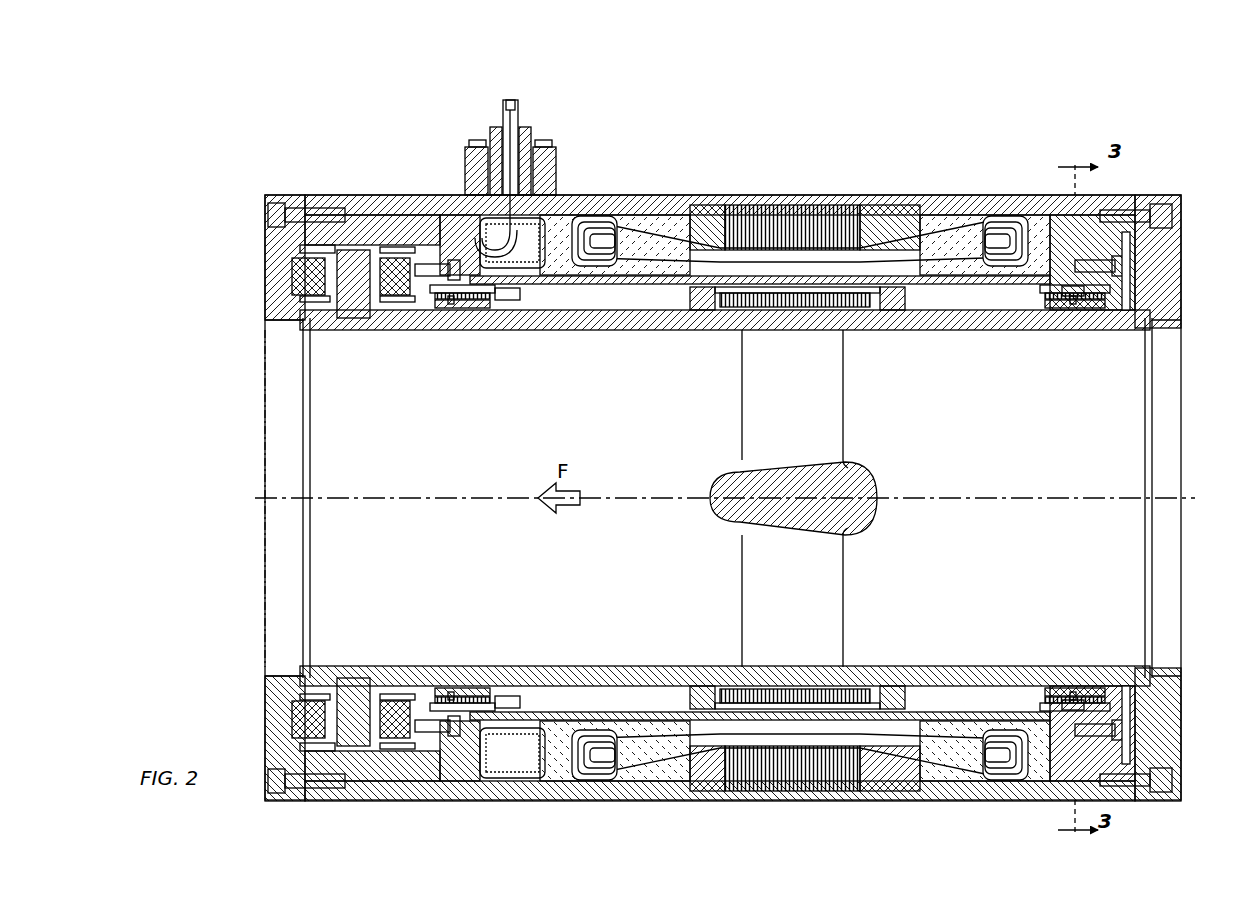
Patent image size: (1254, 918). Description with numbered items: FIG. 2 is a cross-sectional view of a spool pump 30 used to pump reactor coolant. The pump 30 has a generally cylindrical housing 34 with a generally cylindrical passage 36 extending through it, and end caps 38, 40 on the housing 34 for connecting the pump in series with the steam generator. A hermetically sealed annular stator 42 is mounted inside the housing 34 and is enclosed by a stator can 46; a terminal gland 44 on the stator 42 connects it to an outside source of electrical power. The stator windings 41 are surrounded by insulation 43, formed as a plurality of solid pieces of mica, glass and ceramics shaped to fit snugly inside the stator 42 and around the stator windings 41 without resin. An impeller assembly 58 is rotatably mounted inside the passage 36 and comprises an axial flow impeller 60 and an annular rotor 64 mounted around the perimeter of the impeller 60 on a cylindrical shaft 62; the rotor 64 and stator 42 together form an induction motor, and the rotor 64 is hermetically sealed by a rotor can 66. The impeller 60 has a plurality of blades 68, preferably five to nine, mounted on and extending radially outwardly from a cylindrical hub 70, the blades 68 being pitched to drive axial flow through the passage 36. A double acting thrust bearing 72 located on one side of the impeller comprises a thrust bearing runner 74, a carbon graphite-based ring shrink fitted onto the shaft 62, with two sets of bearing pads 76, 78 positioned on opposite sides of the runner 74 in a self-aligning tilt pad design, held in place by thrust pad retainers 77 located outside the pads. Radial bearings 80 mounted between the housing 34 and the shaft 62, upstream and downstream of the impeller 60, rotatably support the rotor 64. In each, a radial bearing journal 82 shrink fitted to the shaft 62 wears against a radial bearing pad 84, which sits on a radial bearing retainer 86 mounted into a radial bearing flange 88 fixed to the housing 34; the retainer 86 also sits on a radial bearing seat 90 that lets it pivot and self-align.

The spool pump 30 is at (240, 400).
The housing 34 is at (930, 197).
The passage 36 is at (1165, 425).
The end cap 38 is at (1181, 275).
The end cap 40 is at (285, 250).
The stator windings 41 is at (808, 245).
The stator 42 is at (760, 215).
The insulation 43 is at (640, 215).
The terminal gland 44 is at (548, 140).
The stator can 46 is at (830, 293).
The impeller assembly 58 is at (685, 432).
The axial flow impeller 60 is at (845, 425).
The cylindrical shaft 62 is at (985, 328).
The annular rotor 64 is at (700, 308).
The rotor can 66 is at (775, 307).
The blades 68 is at (845, 606).
The cylindrical hub 70 is at (868, 480).
The double acting thrust bearing 72 is at (355, 240).
The thrust bearing runner 74 is at (355, 318).
The bearing pads 76 is at (310, 297).
The thrust pad retainers 77 is at (300, 296).
The bearing pads 78 is at (395, 300).
The radial bearings 80 is at (505, 298).
The radial bearing journal 82 is at (475, 300).
The radial bearing pad 84 is at (460, 300).
The radial bearing retainer 86 is at (505, 308).
The radial bearing flange 88 is at (1125, 310).
The radial bearing seat 90 is at (1062, 290).